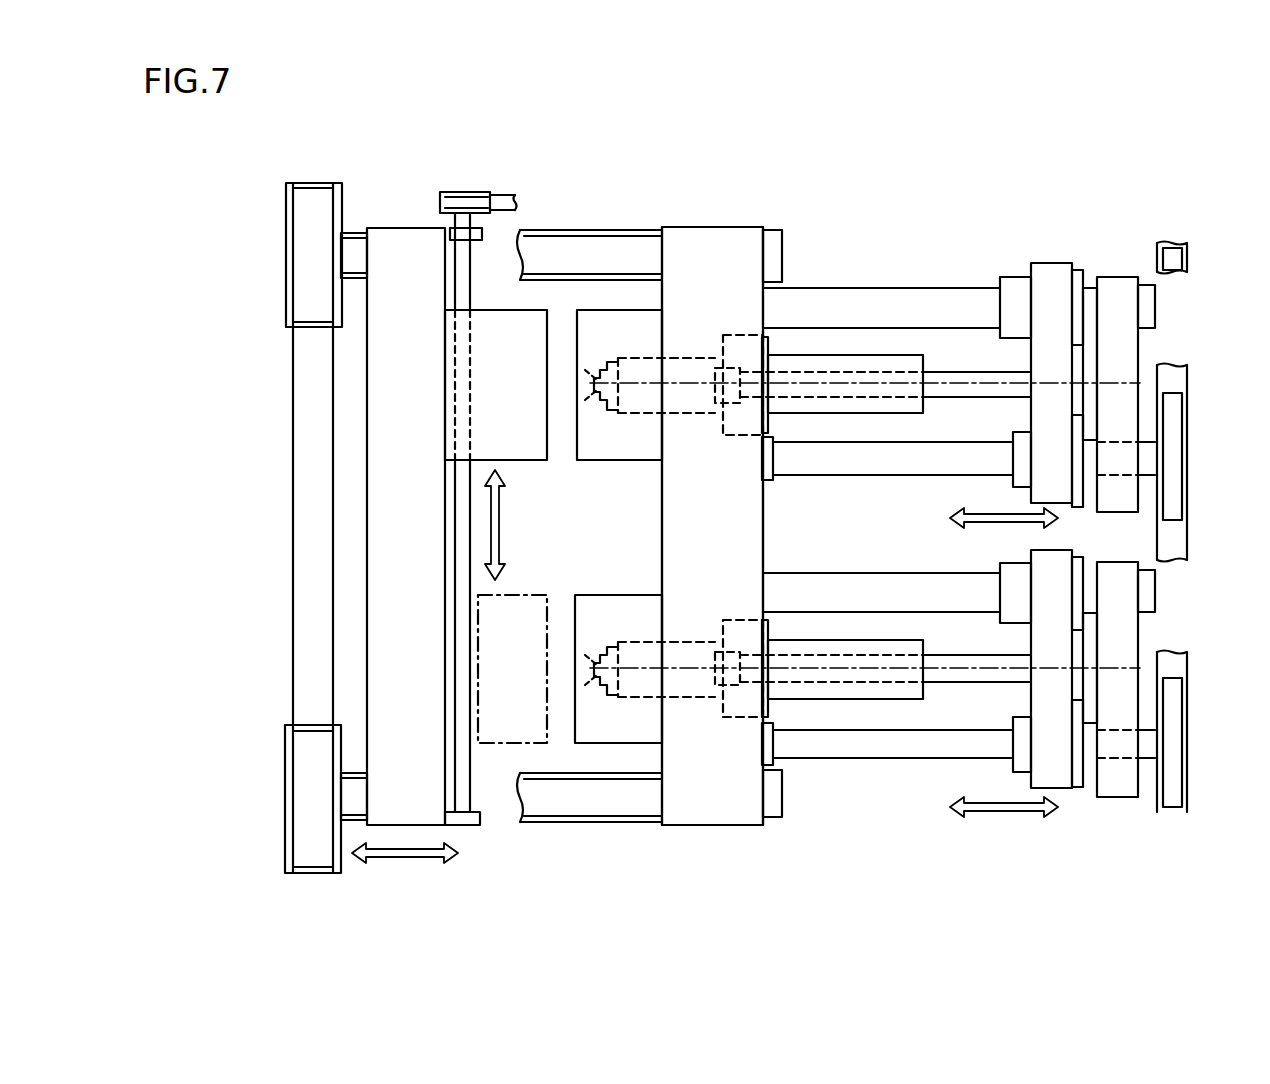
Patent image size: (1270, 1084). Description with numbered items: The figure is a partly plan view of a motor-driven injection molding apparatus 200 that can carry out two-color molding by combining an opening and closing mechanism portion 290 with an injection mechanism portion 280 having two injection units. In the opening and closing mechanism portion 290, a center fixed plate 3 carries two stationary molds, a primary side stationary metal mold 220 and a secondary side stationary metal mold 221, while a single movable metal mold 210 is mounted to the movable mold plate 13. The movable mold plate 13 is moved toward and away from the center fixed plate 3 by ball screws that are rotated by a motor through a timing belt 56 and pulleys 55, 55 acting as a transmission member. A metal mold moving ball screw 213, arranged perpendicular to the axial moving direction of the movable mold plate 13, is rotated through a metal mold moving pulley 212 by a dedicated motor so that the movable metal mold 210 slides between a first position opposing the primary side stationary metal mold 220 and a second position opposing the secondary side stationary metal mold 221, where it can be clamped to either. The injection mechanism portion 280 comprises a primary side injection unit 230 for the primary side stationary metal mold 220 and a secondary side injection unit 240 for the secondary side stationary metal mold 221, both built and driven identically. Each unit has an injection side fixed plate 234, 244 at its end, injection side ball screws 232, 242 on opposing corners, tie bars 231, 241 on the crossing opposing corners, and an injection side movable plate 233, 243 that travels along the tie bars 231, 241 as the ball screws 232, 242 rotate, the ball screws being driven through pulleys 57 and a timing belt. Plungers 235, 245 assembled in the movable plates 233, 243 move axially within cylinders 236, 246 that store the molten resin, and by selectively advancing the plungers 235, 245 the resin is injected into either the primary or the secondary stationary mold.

The motor-driven injection molding apparatus 200 is at (808, 153).
The opening and closing mechanism portion 290 is at (287, 168).
The pulley 55 is at (300, 262).
The timing belt 56 is at (294, 508).
The pulley 57 is at (1168, 250).
The movable mold plate 13 is at (404, 228).
The metal mold moving pulley 212 is at (470, 200).
The metal mold moving ball screw 213 is at (478, 248).
The movable metal mold 210 is at (525, 462).
The primary side stationary metal mold 220 is at (596, 462).
The secondary side stationary metal mold 221 is at (628, 600).
The center fixed plate 3 is at (708, 825).
The injection mechanism portion 280 is at (897, 243).
The primary side injection unit 230 is at (1205, 359).
The tie bar 231 is at (814, 294).
The injection side ball screw 232 is at (790, 468).
The injection side movable plate 233 is at (1050, 265).
The injection side fixed plate 234 is at (1115, 285).
The plunger 235 is at (940, 372).
The cylinder 236 is at (855, 355).
The secondary side injection unit 240 is at (1200, 709).
The tie bar 241 is at (810, 575).
The injection side ball screw 242 is at (897, 760).
The injection side movable plate 243 is at (1072, 550).
The injection side fixed plate 244 is at (1133, 626).
The plunger 245 is at (1008, 680).
The cylinder 246 is at (812, 700).